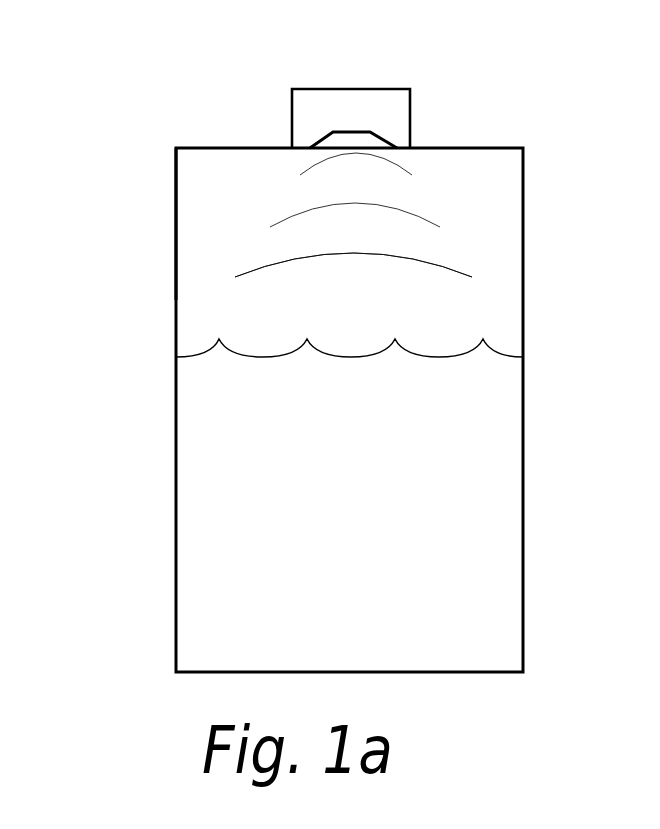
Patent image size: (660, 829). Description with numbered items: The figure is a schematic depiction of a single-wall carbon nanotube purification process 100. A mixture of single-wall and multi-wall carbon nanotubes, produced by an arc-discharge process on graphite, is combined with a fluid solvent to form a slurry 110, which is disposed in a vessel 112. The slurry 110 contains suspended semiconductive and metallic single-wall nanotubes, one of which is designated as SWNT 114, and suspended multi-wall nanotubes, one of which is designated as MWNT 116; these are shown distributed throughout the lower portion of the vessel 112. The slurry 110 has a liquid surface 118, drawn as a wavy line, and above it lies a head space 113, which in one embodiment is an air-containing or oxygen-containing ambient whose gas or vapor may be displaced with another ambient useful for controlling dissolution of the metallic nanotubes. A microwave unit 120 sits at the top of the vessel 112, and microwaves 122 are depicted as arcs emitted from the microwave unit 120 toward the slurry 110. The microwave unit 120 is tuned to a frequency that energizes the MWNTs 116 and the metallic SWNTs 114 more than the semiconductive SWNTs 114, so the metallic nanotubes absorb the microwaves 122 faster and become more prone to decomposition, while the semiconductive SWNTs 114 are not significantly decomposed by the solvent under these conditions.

The single-wall carbon nanotube purification process 100 is at (445, 117).
The slurry 110 is at (197, 422).
The vessel 112 is at (176, 212).
The head space 113 is at (213, 275).
The single-wall carbon nanotube (SWNT) 114 is at (505, 420).
The multi-wall carbon nanotube (MWNT) 116 is at (410, 378).
The liquid surface 118 is at (437, 355).
The microwave unit 120 is at (333, 122).
The microwaves 122 is at (532, 155).